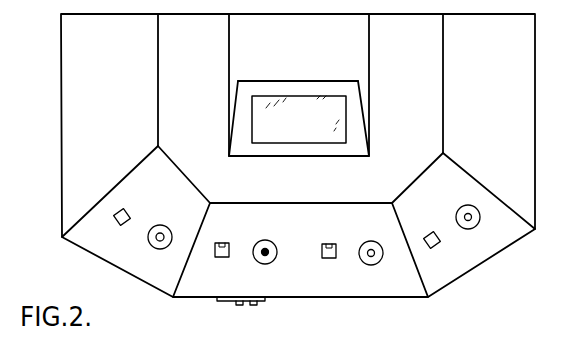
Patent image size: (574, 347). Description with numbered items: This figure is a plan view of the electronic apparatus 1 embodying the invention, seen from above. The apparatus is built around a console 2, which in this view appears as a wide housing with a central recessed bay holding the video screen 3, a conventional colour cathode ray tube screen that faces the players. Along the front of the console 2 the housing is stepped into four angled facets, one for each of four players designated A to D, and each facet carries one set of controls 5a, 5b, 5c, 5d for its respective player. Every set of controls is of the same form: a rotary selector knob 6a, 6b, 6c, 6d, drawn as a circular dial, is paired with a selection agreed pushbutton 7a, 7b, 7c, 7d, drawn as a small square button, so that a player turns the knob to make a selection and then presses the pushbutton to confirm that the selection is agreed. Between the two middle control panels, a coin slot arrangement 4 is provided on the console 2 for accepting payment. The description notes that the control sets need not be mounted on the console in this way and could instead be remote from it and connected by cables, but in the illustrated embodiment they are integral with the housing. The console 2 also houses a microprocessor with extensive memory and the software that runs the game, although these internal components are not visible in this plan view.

The electronic apparatus 1 is at (542, 300).
The console 2 is at (85, 152).
The video screen 3 is at (274, 128).
The coin slot arrangement 4 is at (248, 303).
The set of controls 5a is at (127, 250).
The set of controls 5b is at (222, 275).
The set of controls 5c is at (352, 270).
The set of controls 5d is at (462, 255).
The rotary selector knob 6a is at (160, 224).
The rotary selector knob 6b is at (258, 226).
The rotary selector knob 6c is at (363, 240).
The rotary selector knob 6d is at (458, 210).
The selection agreed pushbutton 7a is at (127, 206).
The selection agreed pushbutton 7b is at (220, 221).
The selection agreed pushbutton 7c is at (323, 244).
The selection agreed pushbutton 7d is at (426, 236).